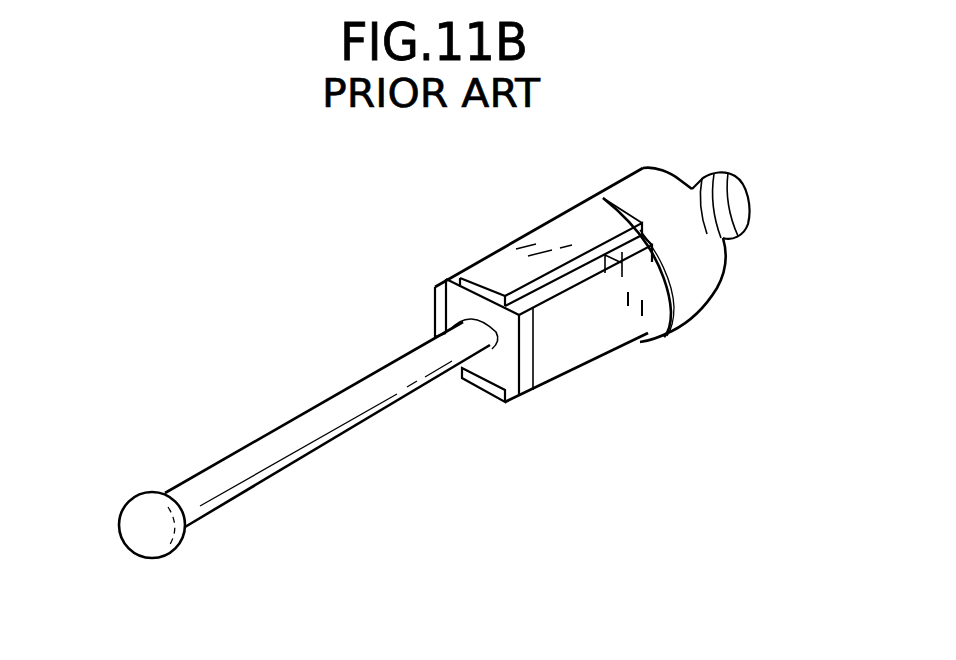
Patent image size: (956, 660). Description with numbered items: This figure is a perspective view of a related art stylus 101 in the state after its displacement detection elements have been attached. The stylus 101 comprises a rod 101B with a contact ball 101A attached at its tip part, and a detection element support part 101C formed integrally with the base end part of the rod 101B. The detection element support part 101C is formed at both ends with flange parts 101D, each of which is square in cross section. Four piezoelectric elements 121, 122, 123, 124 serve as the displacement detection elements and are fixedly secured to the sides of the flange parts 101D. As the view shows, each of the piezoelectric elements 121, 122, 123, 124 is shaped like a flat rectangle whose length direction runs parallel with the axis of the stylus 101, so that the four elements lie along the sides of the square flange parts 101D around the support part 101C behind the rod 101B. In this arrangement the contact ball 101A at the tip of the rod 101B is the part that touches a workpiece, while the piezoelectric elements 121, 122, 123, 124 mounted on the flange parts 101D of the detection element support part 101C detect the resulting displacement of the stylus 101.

The stylus 101 is at (273, 380).
The contact ball 101A is at (148, 506).
The rod 101B is at (313, 452).
The detection element support part 101C is at (510, 363).
The flange part 101D is at (463, 298).
The piezoelectric element 121 is at (556, 236).
The piezoelectric element 122 is at (600, 333).
The piezoelectric element 123 is at (480, 383).
The piezoelectric element 124 is at (434, 312).